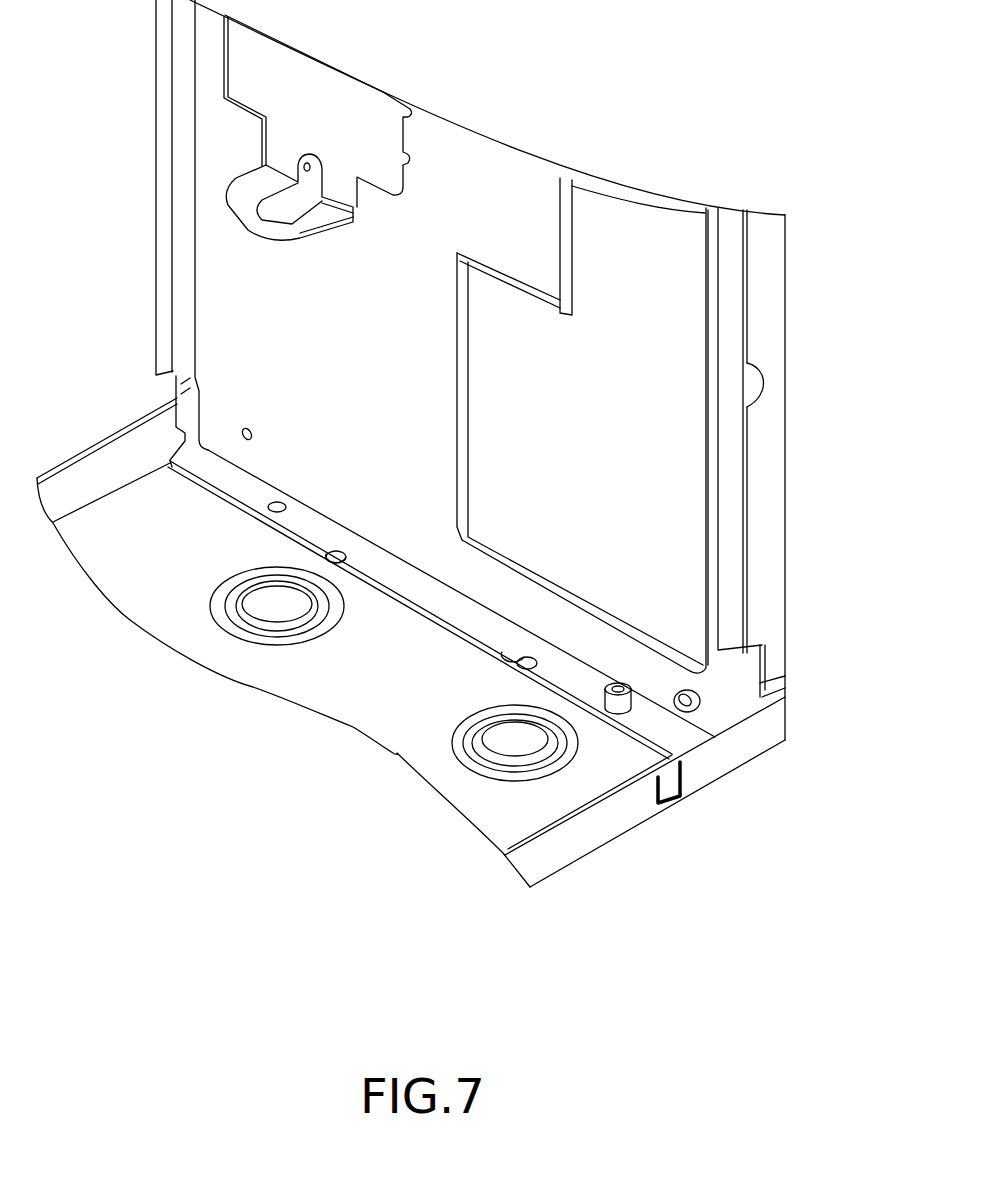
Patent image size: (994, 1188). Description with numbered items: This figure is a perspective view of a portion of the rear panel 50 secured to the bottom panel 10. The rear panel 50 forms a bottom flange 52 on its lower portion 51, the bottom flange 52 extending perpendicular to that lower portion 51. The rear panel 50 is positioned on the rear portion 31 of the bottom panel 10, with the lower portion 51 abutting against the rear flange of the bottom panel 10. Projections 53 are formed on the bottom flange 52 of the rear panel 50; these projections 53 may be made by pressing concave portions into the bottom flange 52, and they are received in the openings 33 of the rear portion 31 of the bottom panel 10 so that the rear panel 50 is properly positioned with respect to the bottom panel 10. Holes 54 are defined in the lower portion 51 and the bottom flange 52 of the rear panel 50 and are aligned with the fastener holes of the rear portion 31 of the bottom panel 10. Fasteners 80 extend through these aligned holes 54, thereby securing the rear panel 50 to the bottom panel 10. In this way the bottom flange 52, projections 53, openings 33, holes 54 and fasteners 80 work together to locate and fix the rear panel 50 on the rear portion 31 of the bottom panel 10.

The bottom panel 10 is at (623, 833).
The rear portion 31 is at (313, 685).
The openings 33 is at (326, 554).
The rear panel 50 is at (790, 363).
The lower portion 51 is at (428, 457).
The bottom flange 52 is at (408, 582).
The projections 53 is at (337, 552).
The holes 54 is at (241, 438).
The fasteners 80 is at (615, 708).